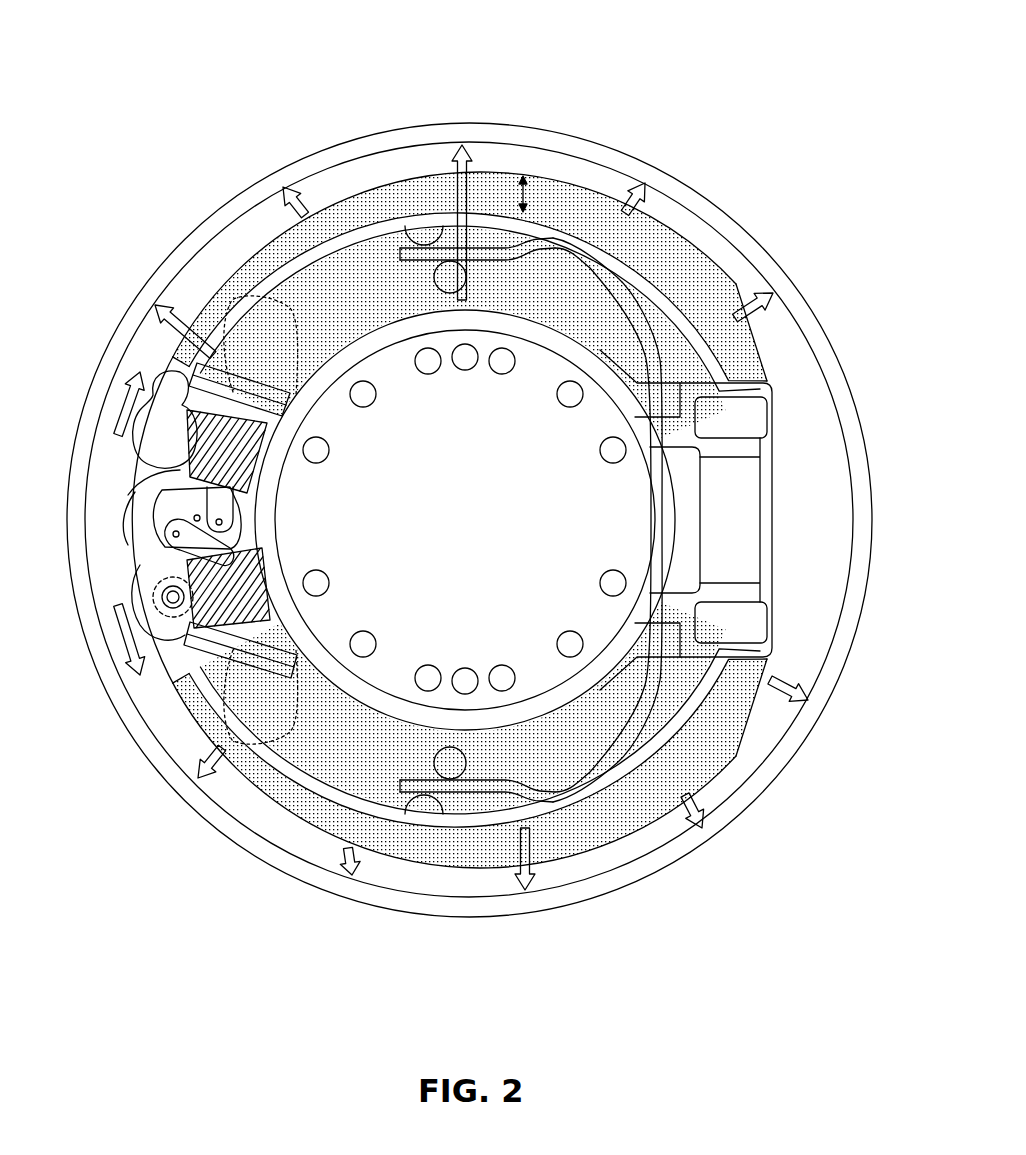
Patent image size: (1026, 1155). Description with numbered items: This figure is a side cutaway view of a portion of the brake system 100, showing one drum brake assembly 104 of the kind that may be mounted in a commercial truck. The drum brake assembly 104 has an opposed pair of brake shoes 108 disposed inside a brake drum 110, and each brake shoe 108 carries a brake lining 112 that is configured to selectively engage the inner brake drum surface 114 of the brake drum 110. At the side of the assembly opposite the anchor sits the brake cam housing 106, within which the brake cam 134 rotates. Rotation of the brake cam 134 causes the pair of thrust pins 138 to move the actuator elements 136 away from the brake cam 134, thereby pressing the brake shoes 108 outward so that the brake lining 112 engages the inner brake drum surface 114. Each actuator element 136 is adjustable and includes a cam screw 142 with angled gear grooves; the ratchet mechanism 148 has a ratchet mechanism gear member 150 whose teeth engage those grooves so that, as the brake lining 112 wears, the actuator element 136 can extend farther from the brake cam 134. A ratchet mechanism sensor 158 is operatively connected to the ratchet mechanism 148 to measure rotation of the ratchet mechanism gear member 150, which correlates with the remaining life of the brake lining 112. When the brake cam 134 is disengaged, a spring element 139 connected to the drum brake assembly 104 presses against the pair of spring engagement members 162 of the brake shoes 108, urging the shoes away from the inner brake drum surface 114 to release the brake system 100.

The brake system 100 is at (104, 46).
The drum brake assembly 104 is at (717, 512).
The brake cam housing 106 is at (140, 468).
The brake shoe 108 is at (388, 232).
The brake drum 110 is at (295, 165).
The brake lining 112 is at (393, 220).
The inner brake drum surface 114 is at (280, 192).
The brake cam 134 is at (173, 498).
The actuator element 136 is at (217, 287).
The thrust pin 138 is at (180, 530).
The spring element 139 is at (642, 323).
The cam screw 142 is at (133, 413).
The ratchet mechanism 148 is at (175, 622).
The ratchet mechanism gear member 150 is at (185, 640).
The ratchet mechanism sensor 158 is at (158, 603).
The spring engagement member 162 is at (455, 277).